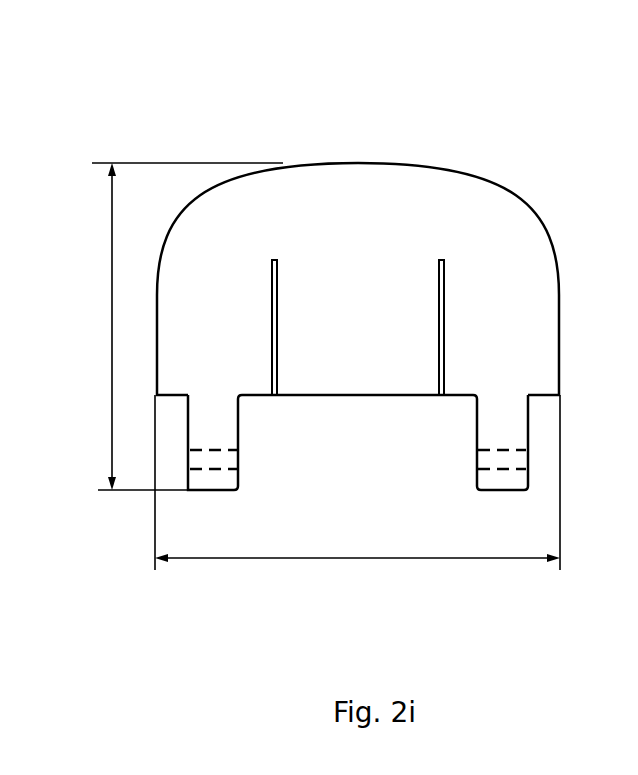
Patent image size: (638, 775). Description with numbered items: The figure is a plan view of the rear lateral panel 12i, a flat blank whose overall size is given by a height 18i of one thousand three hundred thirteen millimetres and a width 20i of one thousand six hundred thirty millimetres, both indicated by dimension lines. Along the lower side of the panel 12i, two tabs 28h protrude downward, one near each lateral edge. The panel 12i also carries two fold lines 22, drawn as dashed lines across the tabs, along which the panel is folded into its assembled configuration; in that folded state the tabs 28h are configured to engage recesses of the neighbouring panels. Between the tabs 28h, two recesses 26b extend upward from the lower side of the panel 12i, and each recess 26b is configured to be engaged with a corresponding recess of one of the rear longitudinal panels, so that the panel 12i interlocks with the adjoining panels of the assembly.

The rear lateral panel 12i is at (110, 85).
The height 18i is at (172, 326).
The width 20i is at (357, 482).
The fold lines 22 is at (230, 450).
The recesses 26b is at (272, 317).
The tabs 28h is at (227, 412).